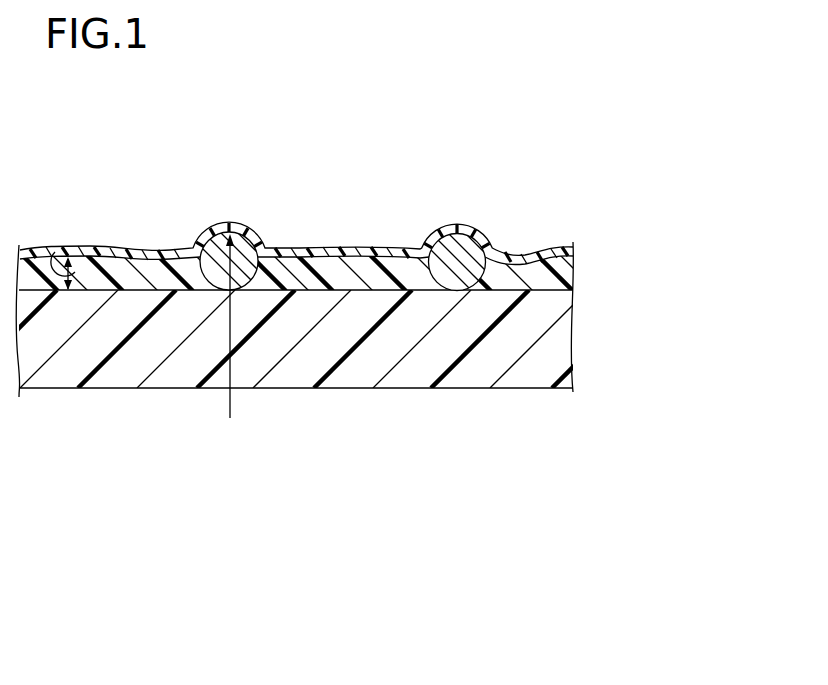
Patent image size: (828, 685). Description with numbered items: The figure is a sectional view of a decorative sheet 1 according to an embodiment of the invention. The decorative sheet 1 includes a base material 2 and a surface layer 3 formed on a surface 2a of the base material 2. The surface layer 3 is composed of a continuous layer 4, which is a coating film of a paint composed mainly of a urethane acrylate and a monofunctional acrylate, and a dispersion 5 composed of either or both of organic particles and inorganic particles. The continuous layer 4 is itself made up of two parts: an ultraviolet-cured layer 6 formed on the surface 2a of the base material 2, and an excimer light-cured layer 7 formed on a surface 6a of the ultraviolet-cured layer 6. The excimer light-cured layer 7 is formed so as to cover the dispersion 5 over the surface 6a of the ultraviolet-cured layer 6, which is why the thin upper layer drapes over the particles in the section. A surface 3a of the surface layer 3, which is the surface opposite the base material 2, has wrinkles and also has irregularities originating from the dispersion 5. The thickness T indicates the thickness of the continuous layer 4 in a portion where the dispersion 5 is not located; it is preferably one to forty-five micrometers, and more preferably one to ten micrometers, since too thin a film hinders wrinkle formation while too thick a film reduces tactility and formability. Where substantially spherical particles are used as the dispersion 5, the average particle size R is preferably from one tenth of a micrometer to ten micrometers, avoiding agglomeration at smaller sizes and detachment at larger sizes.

The decorative sheet 1 is at (432, 148).
The base material 2 is at (560, 343).
The surface of the base material 2a is at (136, 290).
The surface layer 3 is at (377, 242).
The surface of the surface layer 3a is at (375, 248).
The continuous layer 4 is at (352, 242).
The dispersion 5 is at (464, 240).
The ultraviolet-cured layer 6 is at (567, 276).
The surface of the ultraviolet-cured layer 6a is at (283, 256).
The excimer light-cured layer 7 is at (328, 222).
The thickness T is at (62, 266).
The average particle size R is at (230, 345).